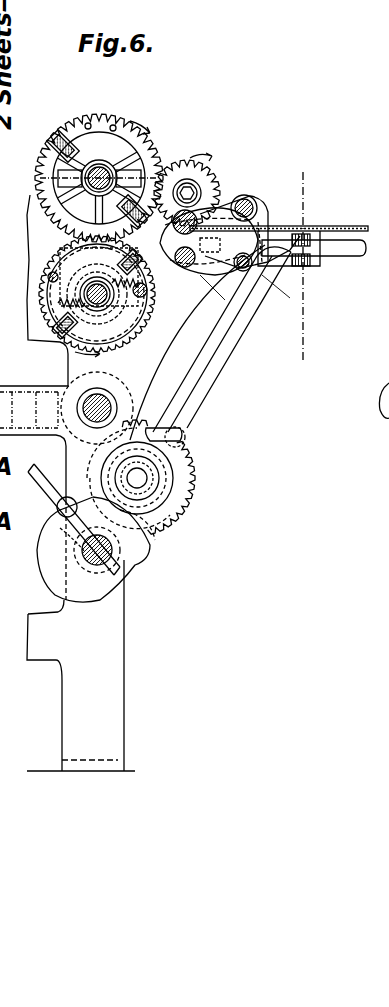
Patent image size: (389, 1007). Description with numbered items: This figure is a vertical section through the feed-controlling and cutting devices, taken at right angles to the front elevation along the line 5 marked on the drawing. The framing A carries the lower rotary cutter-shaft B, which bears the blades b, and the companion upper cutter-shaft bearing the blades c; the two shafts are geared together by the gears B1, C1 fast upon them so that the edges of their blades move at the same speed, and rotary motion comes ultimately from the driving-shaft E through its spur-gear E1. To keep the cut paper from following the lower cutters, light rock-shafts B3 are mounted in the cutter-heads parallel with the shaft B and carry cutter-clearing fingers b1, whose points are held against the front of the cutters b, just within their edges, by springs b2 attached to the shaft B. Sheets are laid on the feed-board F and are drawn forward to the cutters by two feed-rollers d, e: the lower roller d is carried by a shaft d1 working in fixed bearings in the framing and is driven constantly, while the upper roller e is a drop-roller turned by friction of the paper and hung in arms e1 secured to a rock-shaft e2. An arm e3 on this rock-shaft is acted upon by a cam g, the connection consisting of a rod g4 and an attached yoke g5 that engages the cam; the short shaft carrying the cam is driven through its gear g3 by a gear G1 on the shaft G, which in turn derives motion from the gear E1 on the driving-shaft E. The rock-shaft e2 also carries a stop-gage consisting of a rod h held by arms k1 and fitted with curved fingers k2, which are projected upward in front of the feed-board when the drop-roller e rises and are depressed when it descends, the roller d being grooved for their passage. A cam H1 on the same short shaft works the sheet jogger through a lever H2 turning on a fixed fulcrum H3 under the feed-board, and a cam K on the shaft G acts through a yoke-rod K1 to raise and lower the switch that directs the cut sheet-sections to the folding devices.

The framing A is at (112, 628).
The gear C1 is at (140, 156).
The blades c is at (58, 140).
The upper feed-roller e is at (182, 200).
The lower feed-roller d is at (180, 255).
The feed-roller shaft d1 is at (192, 264).
The arms e1 is at (248, 180).
The rock-shaft e2 is at (270, 222).
The arm e3 is at (266, 226).
The feed-board F is at (330, 228).
The fixed fulcrum H3 is at (312, 252).
The stop-gage rod h is at (243, 271).
The stop-gage arms k1 is at (280, 279).
The curved gage fingers k2 is at (211, 305).
The lever H2 is at (192, 385).
The rod g4 is at (236, 345).
The yoke g5 is at (178, 440).
The rock-shafts B3 is at (160, 352).
The section line 5 is at (301, 264).
The gear B1 is at (97, 307).
The lower cutter-shaft B is at (97, 294).
The cutter-clearing fingers b1 is at (148, 292).
The blades b is at (60, 330).
The springs b2 is at (110, 282).
The driving-shaft E is at (100, 405).
The spur-gear E1 is at (383, 412).
The gear g3 is at (193, 455).
The cam g is at (205, 492).
The yoke-rod K1 is at (52, 470).
The gear G1 is at (80, 535).
The shaft G is at (115, 560).
The cam K is at (85, 566).
The cam H1 is at (140, 548).